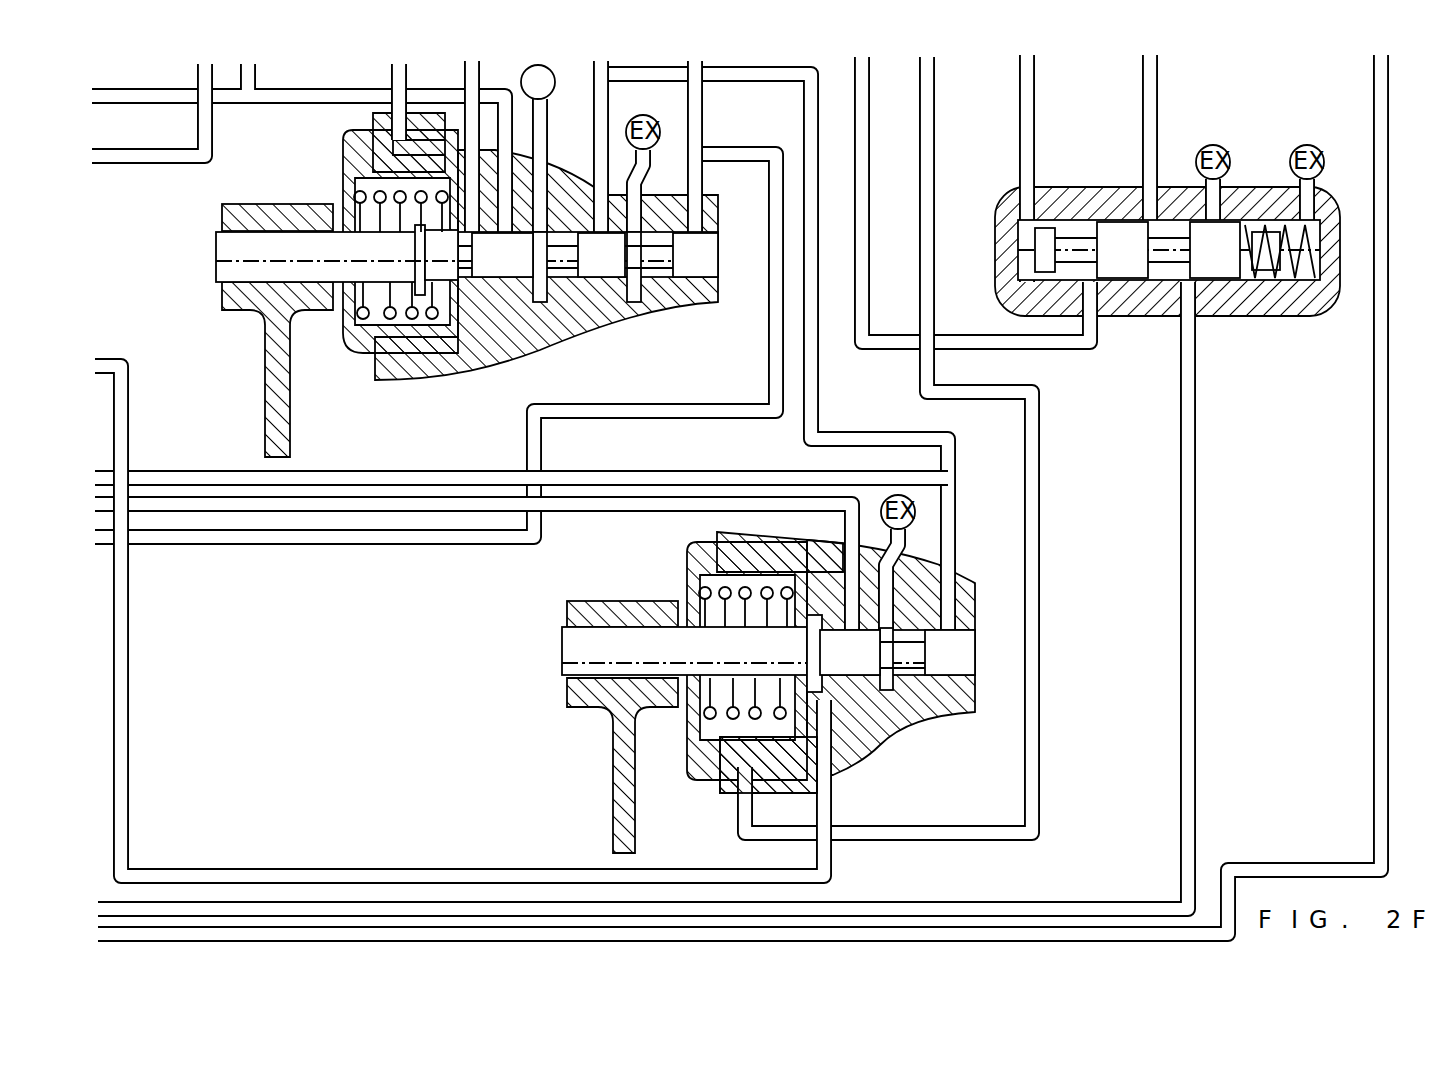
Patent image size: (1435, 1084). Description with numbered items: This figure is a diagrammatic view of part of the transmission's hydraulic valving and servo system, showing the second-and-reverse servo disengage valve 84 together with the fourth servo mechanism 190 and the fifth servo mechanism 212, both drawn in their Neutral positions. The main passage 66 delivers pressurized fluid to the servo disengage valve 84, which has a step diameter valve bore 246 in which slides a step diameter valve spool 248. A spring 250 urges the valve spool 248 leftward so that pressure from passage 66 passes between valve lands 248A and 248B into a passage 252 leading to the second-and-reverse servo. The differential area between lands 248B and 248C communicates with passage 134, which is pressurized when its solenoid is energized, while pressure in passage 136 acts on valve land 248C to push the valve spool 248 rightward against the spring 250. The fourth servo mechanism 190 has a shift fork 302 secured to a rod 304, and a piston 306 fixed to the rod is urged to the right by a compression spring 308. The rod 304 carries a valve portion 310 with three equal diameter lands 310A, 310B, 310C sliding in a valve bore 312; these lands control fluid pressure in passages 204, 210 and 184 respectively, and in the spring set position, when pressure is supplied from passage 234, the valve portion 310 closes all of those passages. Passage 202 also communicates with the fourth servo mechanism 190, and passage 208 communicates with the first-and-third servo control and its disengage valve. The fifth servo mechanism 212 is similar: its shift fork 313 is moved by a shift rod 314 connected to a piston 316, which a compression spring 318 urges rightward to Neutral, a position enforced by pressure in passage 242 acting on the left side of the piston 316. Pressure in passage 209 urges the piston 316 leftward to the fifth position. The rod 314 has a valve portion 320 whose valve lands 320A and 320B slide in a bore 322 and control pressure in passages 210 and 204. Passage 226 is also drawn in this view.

The main passage 66 is at (1153, 100).
The 2/R servo disengage valve 84 is at (1340, 252).
The passage 134 is at (863, 118).
The passage 136 is at (1027, 108).
The passage 184 is at (700, 102).
The fourth servo mechanism 190 is at (546, 287).
The passage 202 is at (478, 118).
The passage 204 is at (340, 103).
The passage 208 is at (120, 160).
The passage 209 is at (121, 358).
The passage 210 is at (600, 113).
The fifth servo mechanism 212 is at (868, 677).
The conduit 226 is at (1377, 108).
The passage 234 is at (392, 92).
The passage 242 is at (930, 108).
The step diameter valve bore 246 is at (1185, 225).
The step diameter valve spool 248 is at (1154, 248).
The valve land 248A is at (1223, 260).
The valve land 248B is at (1127, 258).
The valve land 248C is at (1045, 240).
The spring 250 is at (1295, 280).
The passage 252 is at (694, 512).
The shift fork 302 is at (293, 438).
The rod 304 is at (249, 334).
The piston 306 is at (460, 362).
The compression spring 308 is at (355, 345).
The valve portion 310 is at (616, 313).
The valve land 310A is at (522, 262).
The valve land 310B is at (604, 270).
The valve land 310C is at (708, 262).
The valve bore 312 is at (678, 230).
The shift fork 313 is at (612, 800).
The shift rod 314 is at (568, 727).
The piston 316 is at (798, 722).
The compression spring 318 is at (713, 722).
The valve portion 320 is at (923, 715).
The valve land 320A is at (853, 660).
The valve land 320B is at (978, 655).
The bore 322 is at (942, 586).